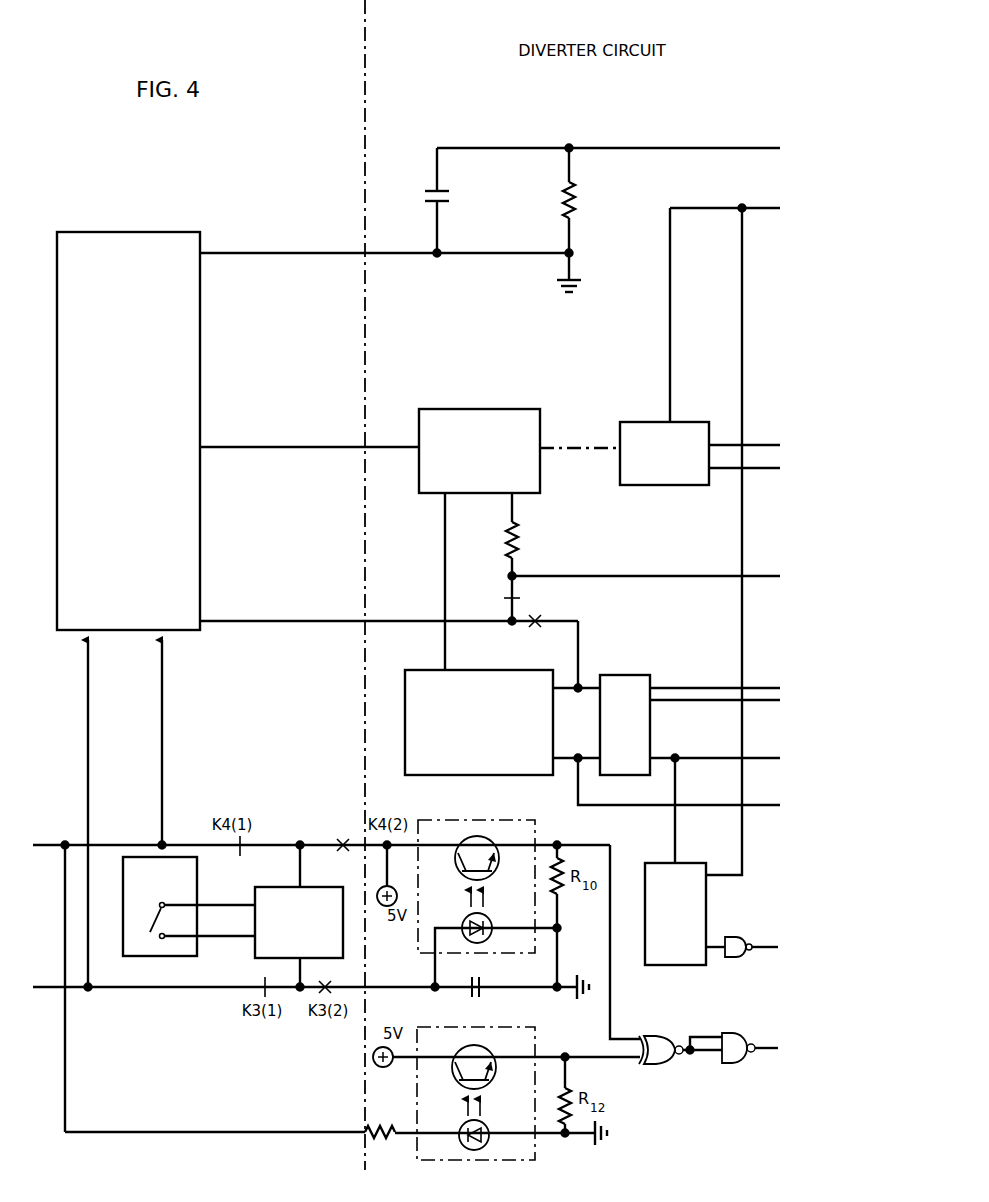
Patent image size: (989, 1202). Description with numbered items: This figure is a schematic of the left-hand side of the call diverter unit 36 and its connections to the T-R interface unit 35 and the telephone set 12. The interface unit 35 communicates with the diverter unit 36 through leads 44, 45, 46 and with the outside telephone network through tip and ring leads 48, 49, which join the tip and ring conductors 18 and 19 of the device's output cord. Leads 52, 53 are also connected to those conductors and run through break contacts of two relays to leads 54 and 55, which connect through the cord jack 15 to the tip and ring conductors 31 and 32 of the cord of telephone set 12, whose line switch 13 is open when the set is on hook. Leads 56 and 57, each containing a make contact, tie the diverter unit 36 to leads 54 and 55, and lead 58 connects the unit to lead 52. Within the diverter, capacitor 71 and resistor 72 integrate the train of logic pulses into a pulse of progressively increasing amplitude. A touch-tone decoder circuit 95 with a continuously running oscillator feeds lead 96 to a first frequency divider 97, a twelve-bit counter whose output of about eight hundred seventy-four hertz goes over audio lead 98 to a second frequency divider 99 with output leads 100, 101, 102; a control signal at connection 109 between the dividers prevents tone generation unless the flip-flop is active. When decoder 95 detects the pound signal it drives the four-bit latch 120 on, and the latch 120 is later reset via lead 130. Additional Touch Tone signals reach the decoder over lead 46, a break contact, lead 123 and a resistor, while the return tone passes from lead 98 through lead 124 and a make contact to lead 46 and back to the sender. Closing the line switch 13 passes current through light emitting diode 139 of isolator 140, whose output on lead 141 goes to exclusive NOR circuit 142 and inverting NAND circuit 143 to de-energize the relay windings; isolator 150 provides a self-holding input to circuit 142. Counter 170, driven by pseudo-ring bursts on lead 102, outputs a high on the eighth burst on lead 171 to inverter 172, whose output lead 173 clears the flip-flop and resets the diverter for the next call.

The telephone set 12 is at (152, 952).
The line switch 13 is at (147, 921).
The cord jack 15 is at (305, 893).
The tip conductor 18 is at (36, 843).
The ring conductor 19 is at (37, 992).
The tip conductor 31 is at (218, 940).
The ring conductor 32 is at (215, 903).
The T-R interface unit 35 is at (125, 241).
The call diverter unit 36 is at (383, 93).
The lead 44 is at (274, 251).
The lead 45 is at (277, 446).
The lead 46 is at (275, 619).
The tip lead 48 is at (162, 708).
The ring lead 49 is at (88, 707).
The lead 52 is at (112, 843).
The lead 53 is at (126, 992).
The lead 54 is at (272, 843).
The lead 55 is at (297, 971).
The lead 56 is at (315, 843).
The lead 57 is at (376, 985).
The lead 58 is at (194, 1130).
The capacitor 71 is at (438, 200).
The resistor 72 is at (571, 220).
The touch-tone decoder circuit 95 is at (490, 407).
The lead 96 is at (445, 553).
The first frequency divider 97 is at (428, 744).
The audio lead 98 is at (585, 681).
The second frequency divider 99 is at (630, 673).
The output lead 100 is at (706, 686).
The output lead 101 is at (702, 703).
The output lead 102 is at (722, 762).
The connection 109 is at (575, 755).
The 4-bit latch 120 is at (640, 420).
The lead 123 is at (634, 575).
The lead 124 is at (567, 620).
The lead 130 is at (708, 206).
The light emitting diode 139 is at (498, 944).
The electro-optical isolator circuit 140 is at (467, 830).
The lead 141 is at (612, 1002).
The exclusive NOR circuit 142 is at (680, 1063).
The inverting NAND circuit 143 is at (747, 1059).
The electro-optical isolator 150 is at (540, 1046).
The counter 170 is at (661, 868).
The lead 171 is at (719, 954).
The inverter 172 is at (741, 933).
The output lead 173 is at (765, 950).